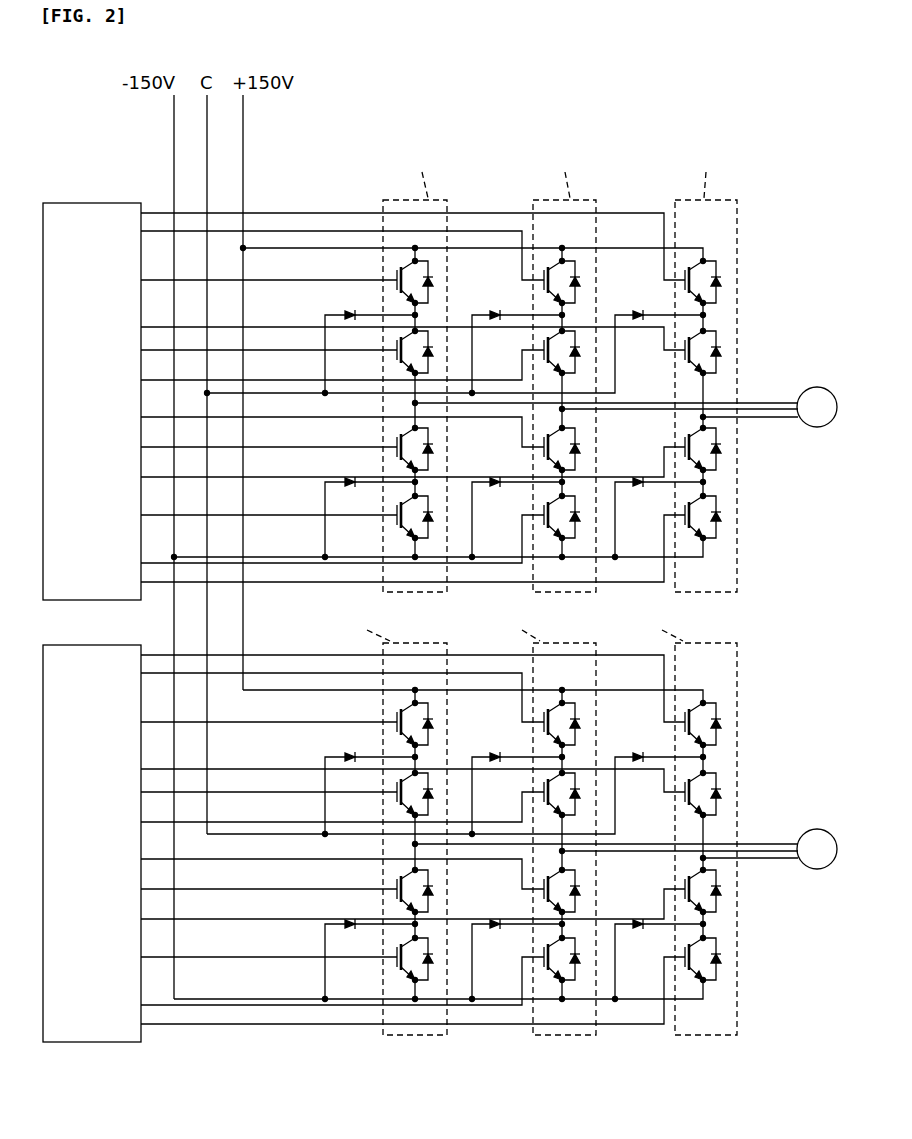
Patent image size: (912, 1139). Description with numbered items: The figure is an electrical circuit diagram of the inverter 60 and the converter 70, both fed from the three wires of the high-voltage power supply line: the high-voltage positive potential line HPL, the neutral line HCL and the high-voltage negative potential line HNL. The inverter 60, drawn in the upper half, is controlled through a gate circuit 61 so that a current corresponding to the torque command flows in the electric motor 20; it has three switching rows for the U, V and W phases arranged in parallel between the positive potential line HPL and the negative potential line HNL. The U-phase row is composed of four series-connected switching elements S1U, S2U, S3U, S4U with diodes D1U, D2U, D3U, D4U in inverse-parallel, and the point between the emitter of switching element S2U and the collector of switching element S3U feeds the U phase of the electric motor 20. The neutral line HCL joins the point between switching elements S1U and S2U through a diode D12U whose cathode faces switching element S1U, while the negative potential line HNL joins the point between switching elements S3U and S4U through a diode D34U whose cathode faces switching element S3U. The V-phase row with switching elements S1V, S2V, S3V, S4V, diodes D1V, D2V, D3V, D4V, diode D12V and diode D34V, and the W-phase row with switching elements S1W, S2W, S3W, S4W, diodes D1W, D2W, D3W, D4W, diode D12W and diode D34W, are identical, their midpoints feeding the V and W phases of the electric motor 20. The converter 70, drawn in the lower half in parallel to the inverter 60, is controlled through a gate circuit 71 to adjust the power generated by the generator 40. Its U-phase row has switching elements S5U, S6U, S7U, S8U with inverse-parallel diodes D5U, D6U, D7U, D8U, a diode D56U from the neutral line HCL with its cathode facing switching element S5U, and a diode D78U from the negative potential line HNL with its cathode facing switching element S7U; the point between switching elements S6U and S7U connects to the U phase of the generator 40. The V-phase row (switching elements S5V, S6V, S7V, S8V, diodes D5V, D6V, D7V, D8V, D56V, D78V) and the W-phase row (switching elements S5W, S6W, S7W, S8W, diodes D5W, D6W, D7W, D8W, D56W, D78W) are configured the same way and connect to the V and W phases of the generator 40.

The electric motor 20 is at (816, 387).
The generator 40 is at (816, 828).
The inverter 60 is at (753, 182).
The gate circuit 61 is at (73, 203).
The converter 70 is at (760, 678).
The gate circuit 71 is at (90, 1042).
The high-voltage negative potential line HNL is at (174, 140).
The neutral line HCL is at (207, 165).
The high-voltage positive potential line HPL is at (243, 121).
The switching element S1U is at (396, 280).
The switching element S2U is at (396, 350).
The switching element S3U is at (396, 447).
The switching element S4U is at (396, 515).
The switching element S1V is at (543, 280).
The switching element S2V is at (543, 350).
The switching element S3V is at (543, 447).
The switching element S4V is at (543, 515).
The switching element S1W is at (684, 280).
The switching element S2W is at (684, 351).
The switching element S3W is at (684, 447).
The switching element S4W is at (684, 515).
The switching element S5U is at (396, 722).
The switching element S6U is at (396, 792).
The switching element S7U is at (396, 889).
The switching element S8U is at (396, 957).
The switching element S5V is at (543, 722).
The switching element S6V is at (543, 792).
The switching element S7V is at (543, 889).
The switching element S8V is at (543, 957).
The switching element S5W is at (684, 722).
The switching element S6W is at (684, 792).
The switching element S7W is at (684, 889).
The switching element S8W is at (684, 957).
The diode D1U is at (431, 282).
The diode D2U is at (430, 352).
The diode D3U is at (430, 450).
The diode D4U is at (430, 518).
The diode D1V is at (578, 281).
The diode D2V is at (580, 353).
The diode D3V is at (578, 449).
The diode D4V is at (578, 518).
The diode D1W is at (721, 282).
The diode D2W is at (721, 352).
The diode D3W is at (721, 450).
The diode D4W is at (721, 520).
The diode D5U is at (431, 724).
The diode D6U is at (430, 794).
The diode D7U is at (430, 892).
The diode D8U is at (430, 960).
The diode D5V is at (578, 723).
The diode D6V is at (580, 795).
The diode D7V is at (578, 891).
The diode D8V is at (578, 962).
The diode D5W is at (721, 724).
The diode D6W is at (721, 794).
The diode D7W is at (721, 893).
The diode D8W is at (721, 963).
The diode D12U is at (349, 312).
The diode D12V is at (494, 312).
The diode D12W is at (638, 316).
The diode D34U is at (349, 486).
The diode D34V is at (495, 487).
The diode D34W is at (638, 481).
The diode D56U is at (349, 755).
The diode D56V is at (494, 755).
The diode D56W is at (640, 756).
The diode D78U is at (349, 928).
The diode D78V is at (495, 929).
The diode D78W is at (640, 926).